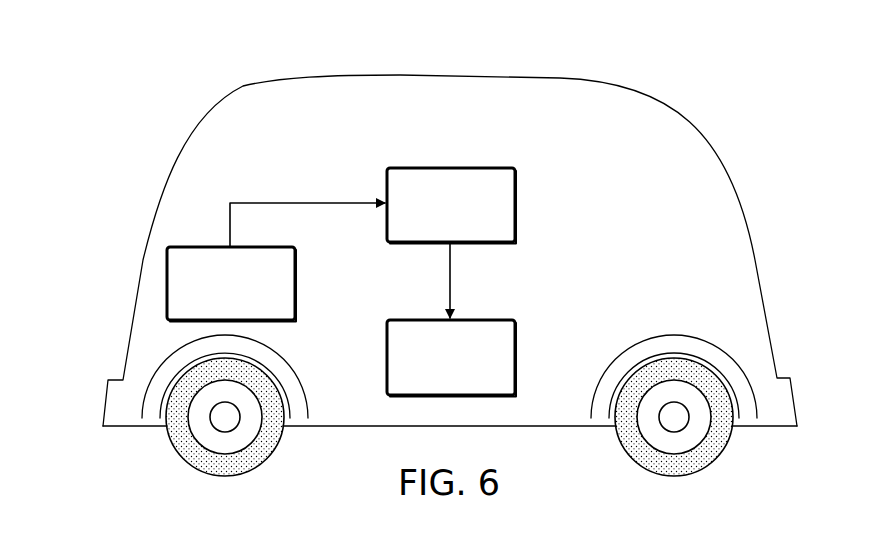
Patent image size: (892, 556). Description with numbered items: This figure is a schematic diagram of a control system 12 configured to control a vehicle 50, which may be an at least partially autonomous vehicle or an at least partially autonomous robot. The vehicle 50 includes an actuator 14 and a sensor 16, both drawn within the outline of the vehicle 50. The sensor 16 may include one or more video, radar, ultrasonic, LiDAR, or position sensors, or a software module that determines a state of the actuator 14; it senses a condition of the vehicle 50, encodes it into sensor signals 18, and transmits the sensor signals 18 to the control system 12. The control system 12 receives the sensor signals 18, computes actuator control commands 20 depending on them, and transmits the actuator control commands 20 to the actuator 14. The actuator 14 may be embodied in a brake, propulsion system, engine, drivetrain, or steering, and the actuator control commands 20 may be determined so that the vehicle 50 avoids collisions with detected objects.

The vehicle 50 is at (110, 32).
The control system 12 is at (449, 167).
The actuator 14 is at (386, 355).
The sensor 16 is at (297, 283).
The sensor signals 18 is at (307, 200).
The actuator control commands 20 is at (448, 281).